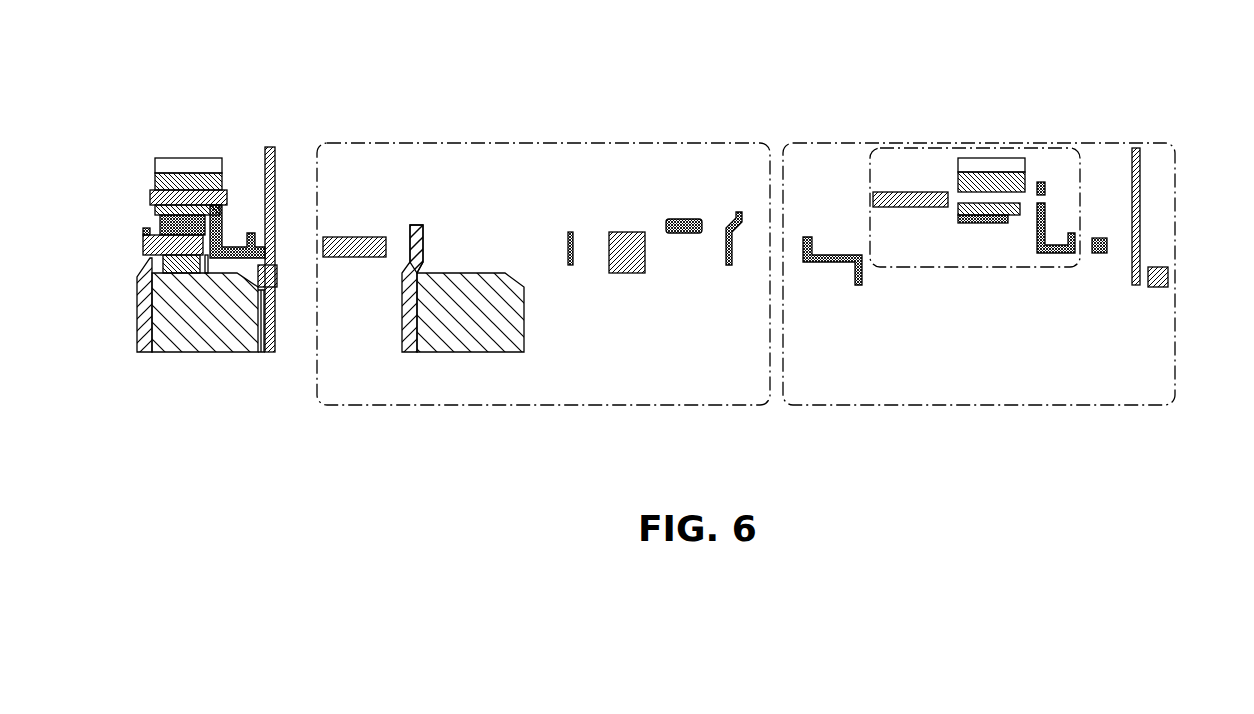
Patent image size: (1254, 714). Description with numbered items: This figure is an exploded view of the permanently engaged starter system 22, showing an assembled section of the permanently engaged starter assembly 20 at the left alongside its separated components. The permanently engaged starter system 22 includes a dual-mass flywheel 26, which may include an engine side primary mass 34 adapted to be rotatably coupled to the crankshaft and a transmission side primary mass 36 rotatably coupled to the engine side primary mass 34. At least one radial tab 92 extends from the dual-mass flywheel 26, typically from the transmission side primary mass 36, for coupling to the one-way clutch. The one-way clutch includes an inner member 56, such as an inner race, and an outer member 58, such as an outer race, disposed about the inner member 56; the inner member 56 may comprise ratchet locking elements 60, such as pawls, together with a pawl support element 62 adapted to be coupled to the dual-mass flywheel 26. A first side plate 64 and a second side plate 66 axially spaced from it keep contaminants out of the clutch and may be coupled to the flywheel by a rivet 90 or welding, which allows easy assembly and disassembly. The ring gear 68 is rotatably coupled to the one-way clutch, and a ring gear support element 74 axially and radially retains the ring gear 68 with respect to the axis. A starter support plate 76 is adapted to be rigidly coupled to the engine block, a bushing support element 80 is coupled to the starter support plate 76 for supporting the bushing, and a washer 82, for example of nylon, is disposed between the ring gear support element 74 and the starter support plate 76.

The permanently engaged starter assembly 20 is at (165, 150).
The permanently engaged starter system 22 is at (113, 140).
The dual-mass flywheel 26 is at (458, 247).
The engine side primary mass 34 is at (475, 287).
The transmission side primary mass 36 is at (404, 262).
The inner member 56 is at (663, 252).
The outer member 58 is at (985, 223).
The ratchet locking elements 60 is at (686, 219).
The pawl support element 62 is at (622, 235).
The first side plate 64 is at (568, 232).
The second side plate 66 is at (727, 227).
The ring gear 68 is at (980, 172).
The ring gear support element 74 is at (1045, 213).
The starter support plate 76 is at (1136, 172).
The bushing support element 80 is at (830, 250).
The washer 82 is at (1100, 238).
The rivet 90 is at (354, 237).
The radial tab 92 is at (420, 225).